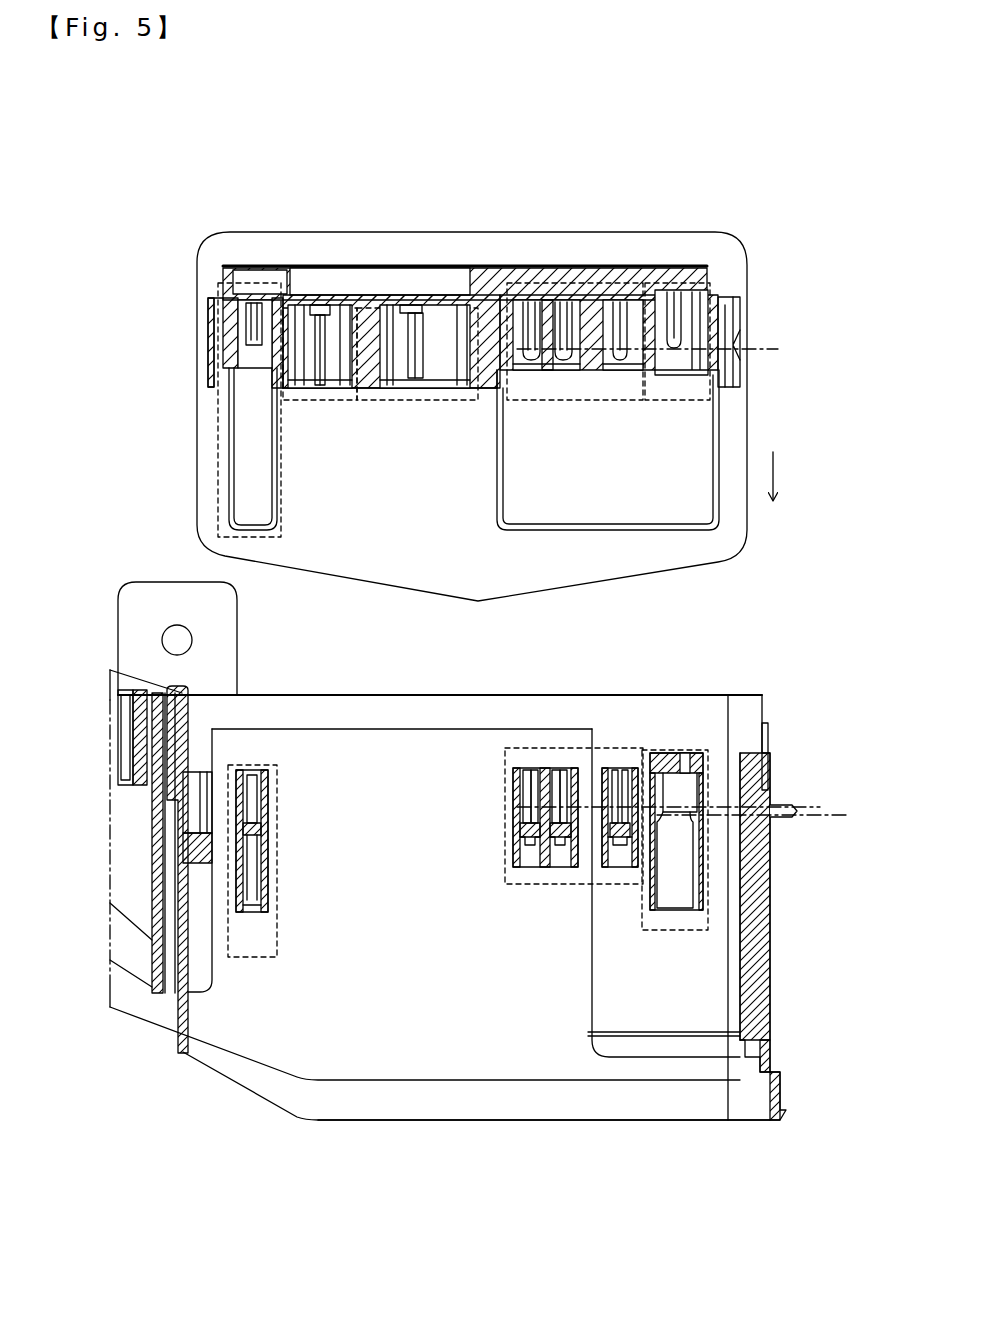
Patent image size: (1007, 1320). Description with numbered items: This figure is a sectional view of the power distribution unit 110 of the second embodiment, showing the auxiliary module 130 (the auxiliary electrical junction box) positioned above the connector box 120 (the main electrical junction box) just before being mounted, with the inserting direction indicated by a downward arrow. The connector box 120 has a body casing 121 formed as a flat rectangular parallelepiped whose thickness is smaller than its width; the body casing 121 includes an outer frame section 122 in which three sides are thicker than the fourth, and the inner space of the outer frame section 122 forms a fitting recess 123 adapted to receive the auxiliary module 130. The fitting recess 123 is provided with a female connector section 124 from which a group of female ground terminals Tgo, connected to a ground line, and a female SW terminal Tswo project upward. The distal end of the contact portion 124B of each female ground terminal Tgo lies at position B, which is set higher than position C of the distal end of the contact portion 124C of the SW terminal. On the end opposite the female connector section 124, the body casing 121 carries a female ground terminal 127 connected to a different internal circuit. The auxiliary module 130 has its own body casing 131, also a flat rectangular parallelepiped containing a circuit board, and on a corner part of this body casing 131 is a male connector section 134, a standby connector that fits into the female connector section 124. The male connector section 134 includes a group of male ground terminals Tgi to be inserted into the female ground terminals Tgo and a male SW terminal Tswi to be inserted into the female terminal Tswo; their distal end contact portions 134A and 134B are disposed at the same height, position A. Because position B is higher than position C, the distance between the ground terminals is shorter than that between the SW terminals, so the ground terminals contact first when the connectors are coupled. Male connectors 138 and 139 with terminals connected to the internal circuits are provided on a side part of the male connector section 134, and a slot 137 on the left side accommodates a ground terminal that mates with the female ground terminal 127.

The power distribution unit 110 is at (203, 217).
The auxiliary module 130 is at (685, 175).
The body casing 131 is at (733, 233).
The male connector section 134 is at (600, 448).
The contact portion 134A is at (558, 323).
The contact portion 134B is at (680, 337).
The terminal accommodating slot 137 is at (215, 393).
The male connector 138 is at (334, 402).
The male connector 139 is at (421, 402).
The male ground terminals Tgi is at (556, 402).
The male SW terminal Tswi is at (684, 402).
The position A is at (660, 351).
The connector box 120 is at (724, 668).
The body casing 121 is at (540, 693).
The outer frame section 122 is at (488, 1100).
The fitting recess 123 is at (368, 1000).
The female connector section 124 is at (583, 915).
The contact portion 124B is at (563, 810).
The contact portion 124C is at (680, 816).
The female ground terminal 127 is at (264, 960).
The female ground terminals Tgo is at (520, 886).
The female SW terminal Tswo is at (690, 932).
The position B is at (681, 801).
The position C is at (764, 819).